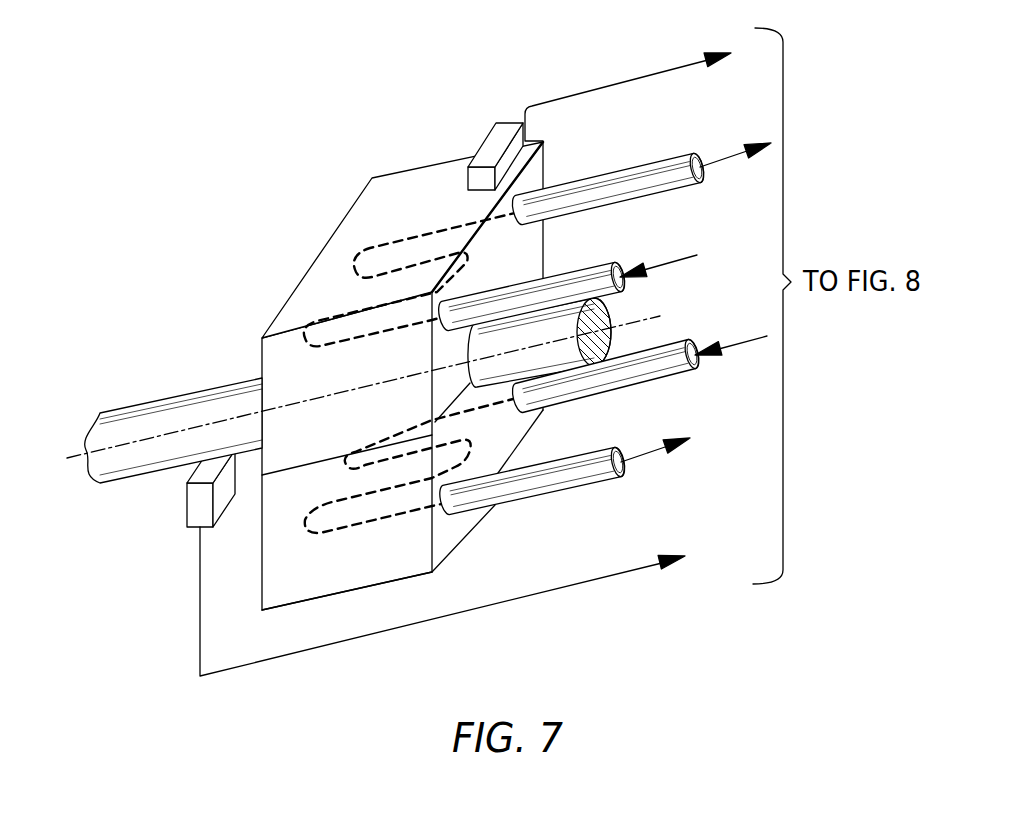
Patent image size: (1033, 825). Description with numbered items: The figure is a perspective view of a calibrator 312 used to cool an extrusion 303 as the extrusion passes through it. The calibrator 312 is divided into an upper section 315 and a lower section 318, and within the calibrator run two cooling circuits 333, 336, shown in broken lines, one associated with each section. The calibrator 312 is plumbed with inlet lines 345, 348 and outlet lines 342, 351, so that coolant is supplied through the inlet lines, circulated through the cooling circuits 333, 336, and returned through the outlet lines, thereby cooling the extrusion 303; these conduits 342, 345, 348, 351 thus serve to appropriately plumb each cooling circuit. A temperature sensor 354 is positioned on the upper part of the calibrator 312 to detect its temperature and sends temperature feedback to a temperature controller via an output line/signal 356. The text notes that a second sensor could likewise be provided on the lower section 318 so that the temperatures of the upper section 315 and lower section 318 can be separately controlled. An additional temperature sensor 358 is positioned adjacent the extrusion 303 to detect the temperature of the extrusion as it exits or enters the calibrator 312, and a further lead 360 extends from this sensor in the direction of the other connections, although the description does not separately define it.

The extrusion 303 is at (163, 420).
The calibrator 312 is at (295, 585).
The upper section 315 is at (262, 358).
The lower section 318 is at (262, 570).
The cooling circuit 333 is at (430, 227).
The cooling circuit 336 is at (345, 540).
The outlet line 342 is at (615, 180).
The inlet line 345 is at (570, 283).
The inlet line 348 is at (637, 378).
The outlet line 351 is at (530, 493).
The temperature sensor 354 is at (502, 128).
The output line/signal 356 is at (618, 87).
The temperature sensor 358 is at (187, 503).
The lead line 360 is at (497, 605).